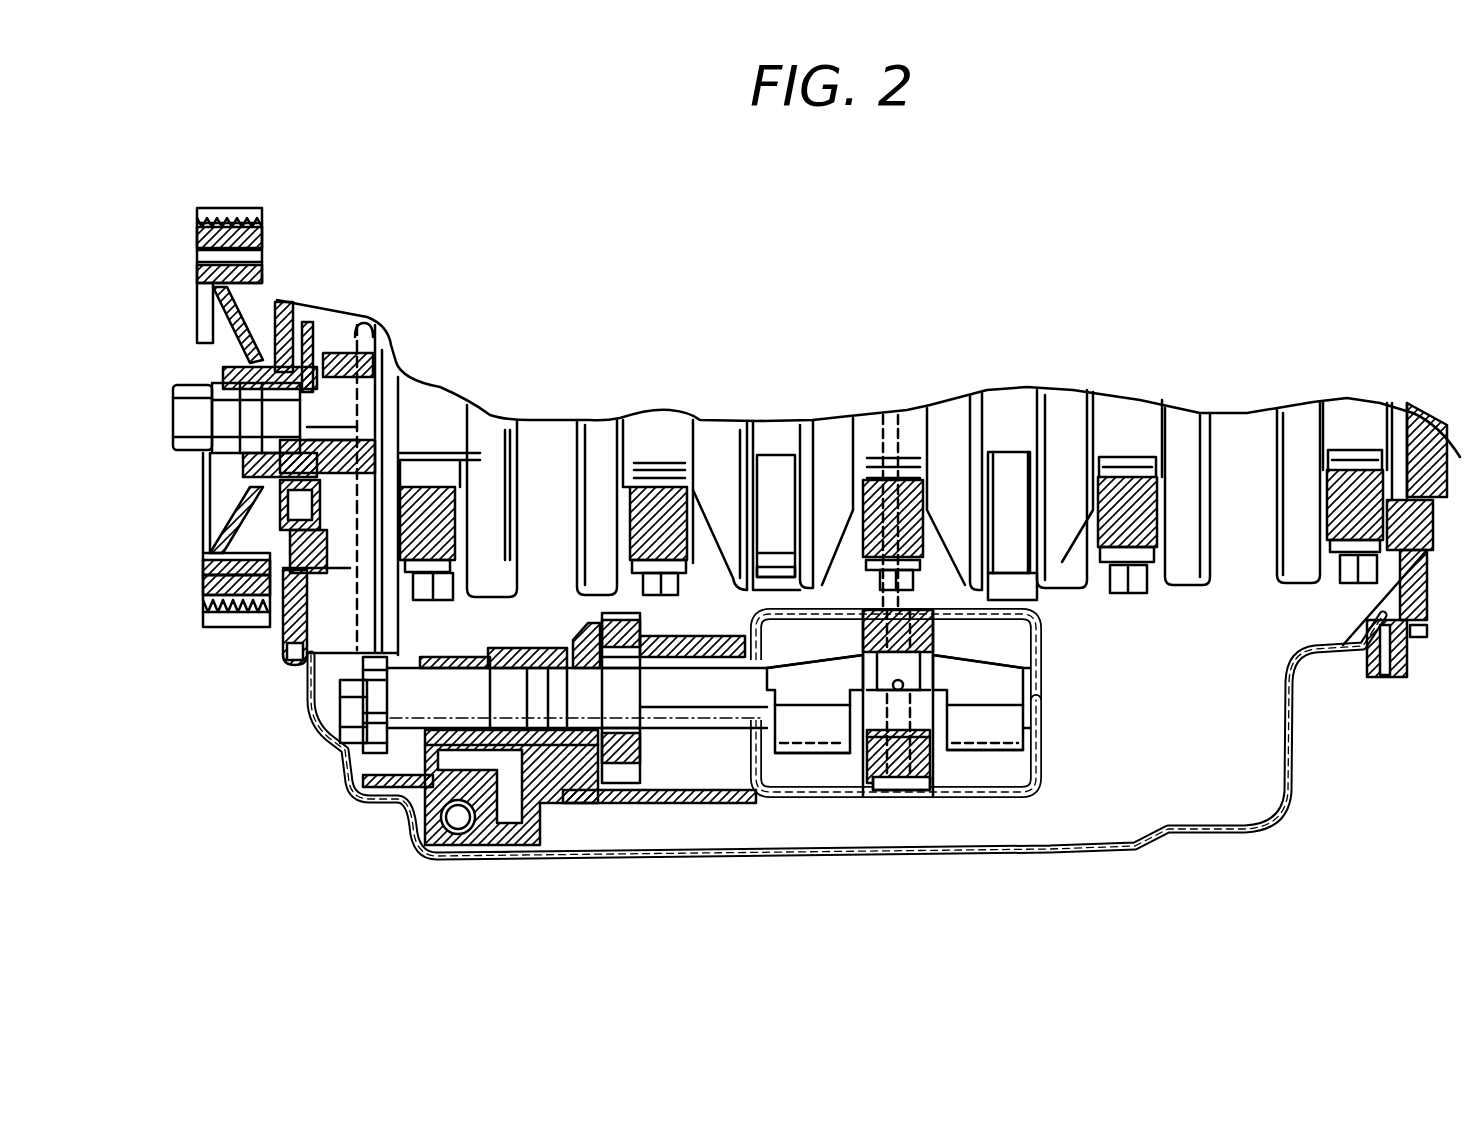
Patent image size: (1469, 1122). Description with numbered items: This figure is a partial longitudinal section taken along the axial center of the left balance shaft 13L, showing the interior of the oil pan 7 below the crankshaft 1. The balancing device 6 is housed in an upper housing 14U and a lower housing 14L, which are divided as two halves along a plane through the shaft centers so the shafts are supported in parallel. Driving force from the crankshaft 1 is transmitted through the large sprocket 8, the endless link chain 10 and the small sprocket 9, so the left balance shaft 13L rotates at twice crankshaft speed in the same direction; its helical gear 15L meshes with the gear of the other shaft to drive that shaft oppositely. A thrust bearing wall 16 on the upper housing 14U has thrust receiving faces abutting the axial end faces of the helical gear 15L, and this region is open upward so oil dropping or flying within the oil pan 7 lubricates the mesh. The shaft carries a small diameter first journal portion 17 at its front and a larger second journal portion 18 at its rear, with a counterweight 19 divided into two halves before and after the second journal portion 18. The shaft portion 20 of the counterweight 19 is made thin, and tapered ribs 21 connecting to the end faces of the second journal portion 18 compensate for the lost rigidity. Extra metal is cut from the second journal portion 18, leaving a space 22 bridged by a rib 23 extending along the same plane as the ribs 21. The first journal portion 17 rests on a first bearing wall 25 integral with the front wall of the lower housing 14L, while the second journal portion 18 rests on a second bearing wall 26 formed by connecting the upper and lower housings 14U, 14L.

The crankshaft 1 is at (440, 387).
The balancing device 6 is at (1062, 748).
The oil pan 7 is at (1290, 747).
The large sprocket 8 is at (362, 324).
The small sprocket 9 is at (347, 748).
The endless link chain 10 is at (360, 645).
The left balance shaft 13L is at (744, 725).
The upper housing 14U is at (1044, 630).
The lower housing 14L is at (1027, 798).
The helical gear 15L is at (626, 790).
The thrust bearing wall 16 is at (632, 678).
The first journal portion 17 is at (514, 677).
The second journal portion 18 is at (870, 795).
The counterweight 19 is at (797, 750).
The shaft portion 20 is at (790, 683).
The tapered rib 21 is at (847, 665).
The space 22 is at (911, 646).
The rib 23 is at (879, 667).
The first bearing wall 25 is at (540, 750).
The second bearing wall 26 is at (938, 790).